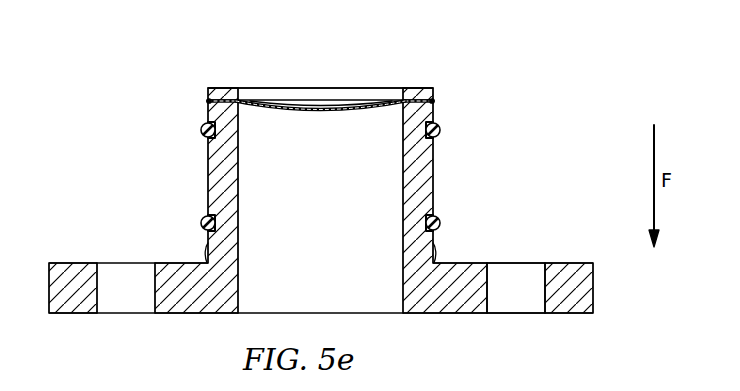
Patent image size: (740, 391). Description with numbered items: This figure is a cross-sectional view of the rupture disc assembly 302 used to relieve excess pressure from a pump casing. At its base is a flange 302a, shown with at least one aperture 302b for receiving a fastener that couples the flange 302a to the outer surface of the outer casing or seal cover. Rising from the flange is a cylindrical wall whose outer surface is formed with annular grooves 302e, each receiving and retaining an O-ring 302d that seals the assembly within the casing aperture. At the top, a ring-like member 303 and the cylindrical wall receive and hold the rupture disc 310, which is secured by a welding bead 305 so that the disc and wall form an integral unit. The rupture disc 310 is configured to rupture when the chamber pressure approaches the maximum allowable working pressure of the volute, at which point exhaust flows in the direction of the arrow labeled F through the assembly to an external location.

The rupture disc assembly 302 is at (142, 75).
The flange 302a is at (578, 262).
The aperture 302b is at (545, 290).
The O-ring 302d is at (204, 220).
The annular groove 302e is at (437, 218).
The ring-like member 303 is at (420, 93).
The welding bead 305 is at (435, 101).
The rupture disc 310 is at (363, 112).